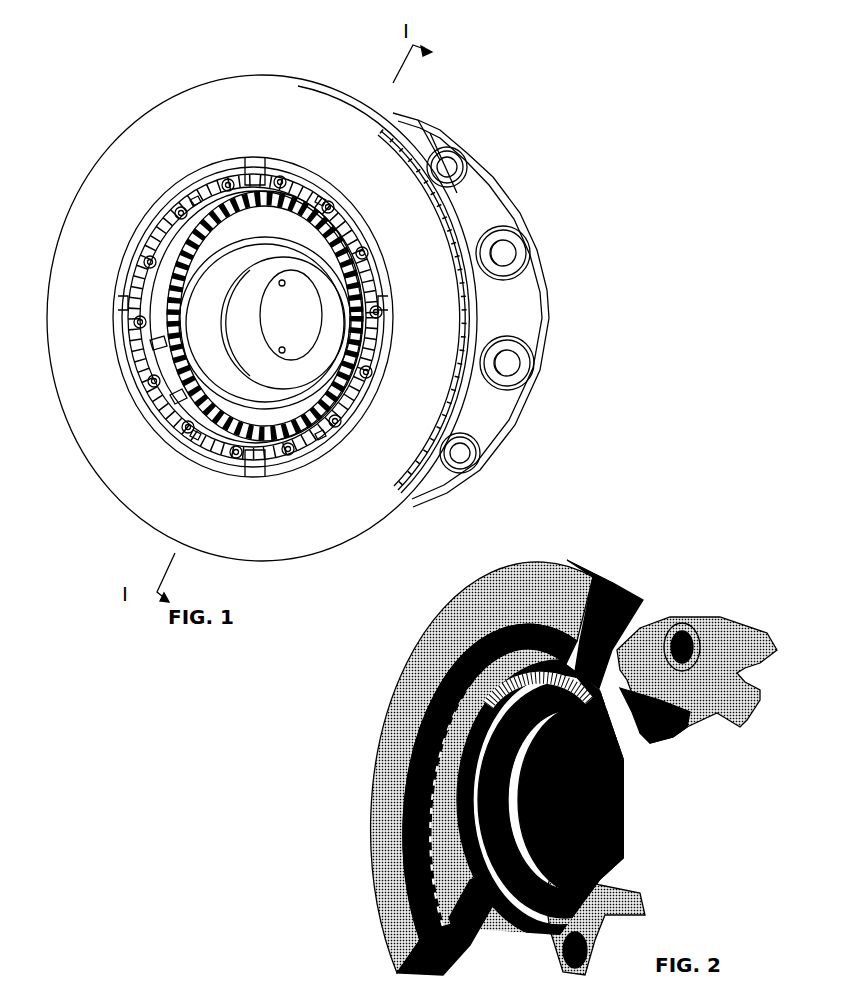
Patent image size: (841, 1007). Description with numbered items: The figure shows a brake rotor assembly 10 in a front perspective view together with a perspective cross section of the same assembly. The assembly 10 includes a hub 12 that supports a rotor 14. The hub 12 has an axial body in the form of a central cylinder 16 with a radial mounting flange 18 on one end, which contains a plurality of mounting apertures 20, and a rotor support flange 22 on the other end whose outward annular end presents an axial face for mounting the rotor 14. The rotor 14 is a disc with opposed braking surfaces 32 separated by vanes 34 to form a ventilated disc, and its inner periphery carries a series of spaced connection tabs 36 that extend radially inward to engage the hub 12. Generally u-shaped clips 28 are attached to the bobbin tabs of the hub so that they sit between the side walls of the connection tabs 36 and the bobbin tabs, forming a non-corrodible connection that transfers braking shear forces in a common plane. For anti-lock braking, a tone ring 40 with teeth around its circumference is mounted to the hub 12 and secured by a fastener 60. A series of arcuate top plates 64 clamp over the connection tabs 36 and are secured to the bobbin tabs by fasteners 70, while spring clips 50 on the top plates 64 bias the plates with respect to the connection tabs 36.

In FIG. 1, the brake rotor assembly 10 is at (517, 113).
In FIG. 2, the brake rotor assembly 10 is at (651, 547).
In FIG. 1, the hub 12 is at (547, 280).
In FIG. 2, the hub 12 is at (688, 740).
In FIG. 1, the rotor 14 is at (302, 84).
In FIG. 2, the rotor 14 is at (362, 878).
In FIG. 1, the central cylinder 16 is at (300, 370).
In FIG. 2, the central cylinder 16 is at (545, 888).
In FIG. 1, the radial mounting flange 18 is at (533, 330).
In FIG. 2, the radial mounting flange 18 is at (722, 633).
In FIG. 1, the mounting apertures 20 is at (503, 253).
In FIG. 2, the mounting apertures 20 is at (760, 678).
In FIG. 2, the rotor support flange 22 is at (490, 918).
In FIG. 1, the clip 28 is at (157, 313).
In FIG. 1, the braking surfaces 32 is at (162, 122).
In FIG. 2, the braking surfaces 32 is at (385, 713).
In FIG. 1, the vanes 34 is at (145, 215).
In FIG. 2, the vanes 34 is at (403, 757).
In FIG. 1, the connection tabs 36 is at (163, 350).
In FIG. 1, the tone ring 40 is at (255, 180).
In FIG. 2, the tone ring 40 is at (636, 634).
In FIG. 1, the spring clips 50 is at (178, 400).
In FIG. 1, the fastener 60 is at (272, 415).
In FIG. 1, the top plate 64 is at (212, 185).
In FIG. 2, the top plate 64 is at (400, 818).
In FIG. 1, the fasteners 70 is at (155, 257).
In FIG. 2, the fasteners 70 is at (423, 908).